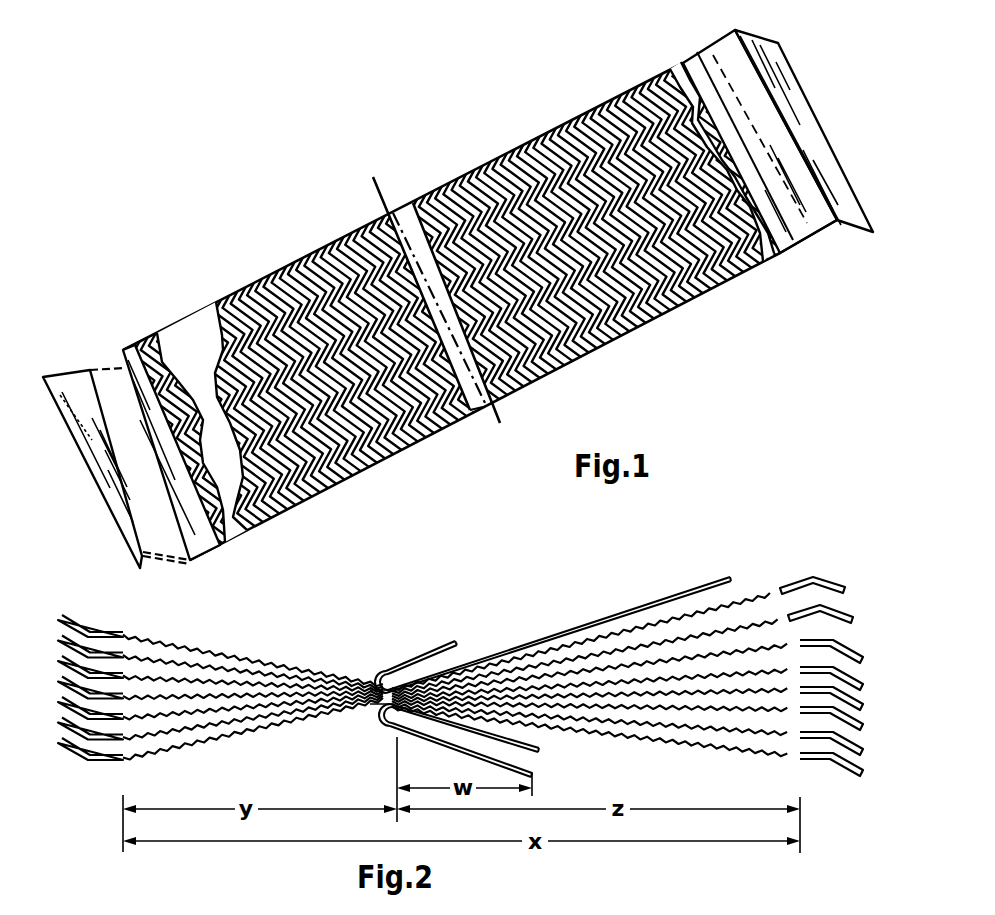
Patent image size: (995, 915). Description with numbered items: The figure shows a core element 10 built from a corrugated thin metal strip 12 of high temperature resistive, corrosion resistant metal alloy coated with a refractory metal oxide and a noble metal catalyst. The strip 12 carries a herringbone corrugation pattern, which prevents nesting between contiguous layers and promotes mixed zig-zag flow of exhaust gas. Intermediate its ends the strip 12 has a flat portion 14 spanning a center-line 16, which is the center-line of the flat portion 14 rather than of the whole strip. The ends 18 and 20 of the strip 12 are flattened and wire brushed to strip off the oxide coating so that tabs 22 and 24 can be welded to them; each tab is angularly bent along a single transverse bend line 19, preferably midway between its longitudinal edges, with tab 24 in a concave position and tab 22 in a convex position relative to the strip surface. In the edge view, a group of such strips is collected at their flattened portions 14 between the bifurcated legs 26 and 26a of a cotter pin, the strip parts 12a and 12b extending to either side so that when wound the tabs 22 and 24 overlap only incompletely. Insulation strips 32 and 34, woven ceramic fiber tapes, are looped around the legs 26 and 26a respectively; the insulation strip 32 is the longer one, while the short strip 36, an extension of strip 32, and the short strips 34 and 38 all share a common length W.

In FIG. 1, the core element 10 is at (579, 84).
In FIG. 1, the corrugated thin metal strip 12 is at (492, 160).
In FIG. 2, the corrugated thin metal strip 12 is at (713, 740).
In FIG. 2, the strip part 12a is at (745, 597).
In FIG. 2, the strip part 12b is at (302, 668).
In FIG. 1, the flat portion 14 is at (500, 393).
In FIG. 1, the center-line 16 is at (490, 428).
In FIG. 1, the end of strip 18 is at (827, 230).
In FIG. 1, the bend line 19 is at (170, 533).
In FIG. 2, the bend line 19 is at (368, 712).
In FIG. 1, the end of strip 20 is at (205, 523).
In FIG. 1, the tab 22 is at (790, 115).
In FIG. 2, the tab 22 is at (838, 582).
In FIG. 1, the tab 24 is at (140, 528).
In FIG. 2, the tab 24 is at (62, 742).
In FIG. 2, the bifurcated leg of cotter pin 26 is at (395, 670).
In FIG. 2, the bifurcated leg of cotter pin 26a is at (388, 727).
In FIG. 2, the insulation strip 32 is at (527, 645).
In FIG. 2, the insulation strip 34 is at (527, 738).
In FIG. 2, the short strip 36 is at (418, 657).
In FIG. 2, the short strip 38 is at (497, 760).